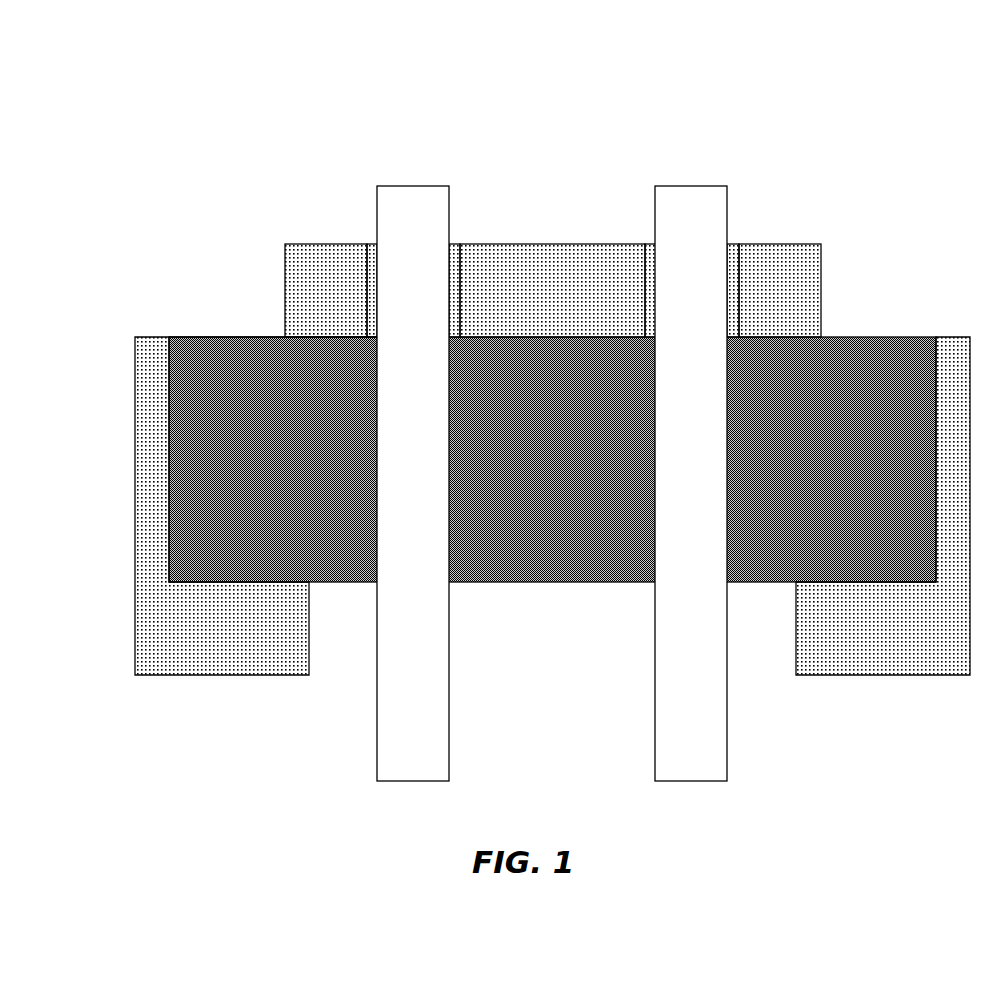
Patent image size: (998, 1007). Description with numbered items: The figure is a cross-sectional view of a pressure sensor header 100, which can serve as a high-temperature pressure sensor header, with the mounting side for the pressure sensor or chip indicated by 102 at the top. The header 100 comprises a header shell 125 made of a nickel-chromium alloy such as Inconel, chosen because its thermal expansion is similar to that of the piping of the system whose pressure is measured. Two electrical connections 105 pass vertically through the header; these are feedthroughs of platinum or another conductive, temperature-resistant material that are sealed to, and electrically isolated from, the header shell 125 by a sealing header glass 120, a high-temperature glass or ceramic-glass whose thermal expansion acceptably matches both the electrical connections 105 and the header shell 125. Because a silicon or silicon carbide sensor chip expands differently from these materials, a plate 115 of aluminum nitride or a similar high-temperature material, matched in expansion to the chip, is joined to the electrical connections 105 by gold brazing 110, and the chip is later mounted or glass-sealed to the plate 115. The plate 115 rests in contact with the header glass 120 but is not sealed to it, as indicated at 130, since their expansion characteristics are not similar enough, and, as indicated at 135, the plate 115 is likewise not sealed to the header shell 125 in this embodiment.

The pressure sensor header 100 is at (497, 408).
The mounting side 102 is at (607, 80).
The electrical connections 105 is at (642, 203).
The brazing 110 is at (465, 235).
The plate 115 is at (350, 284).
The sealing header glass 120 is at (572, 477).
The header shell 125 is at (246, 641).
The unsealed contact between plate and header glass 130 is at (323, 328).
The unsealed interface between plate and header shell 135 is at (272, 329).